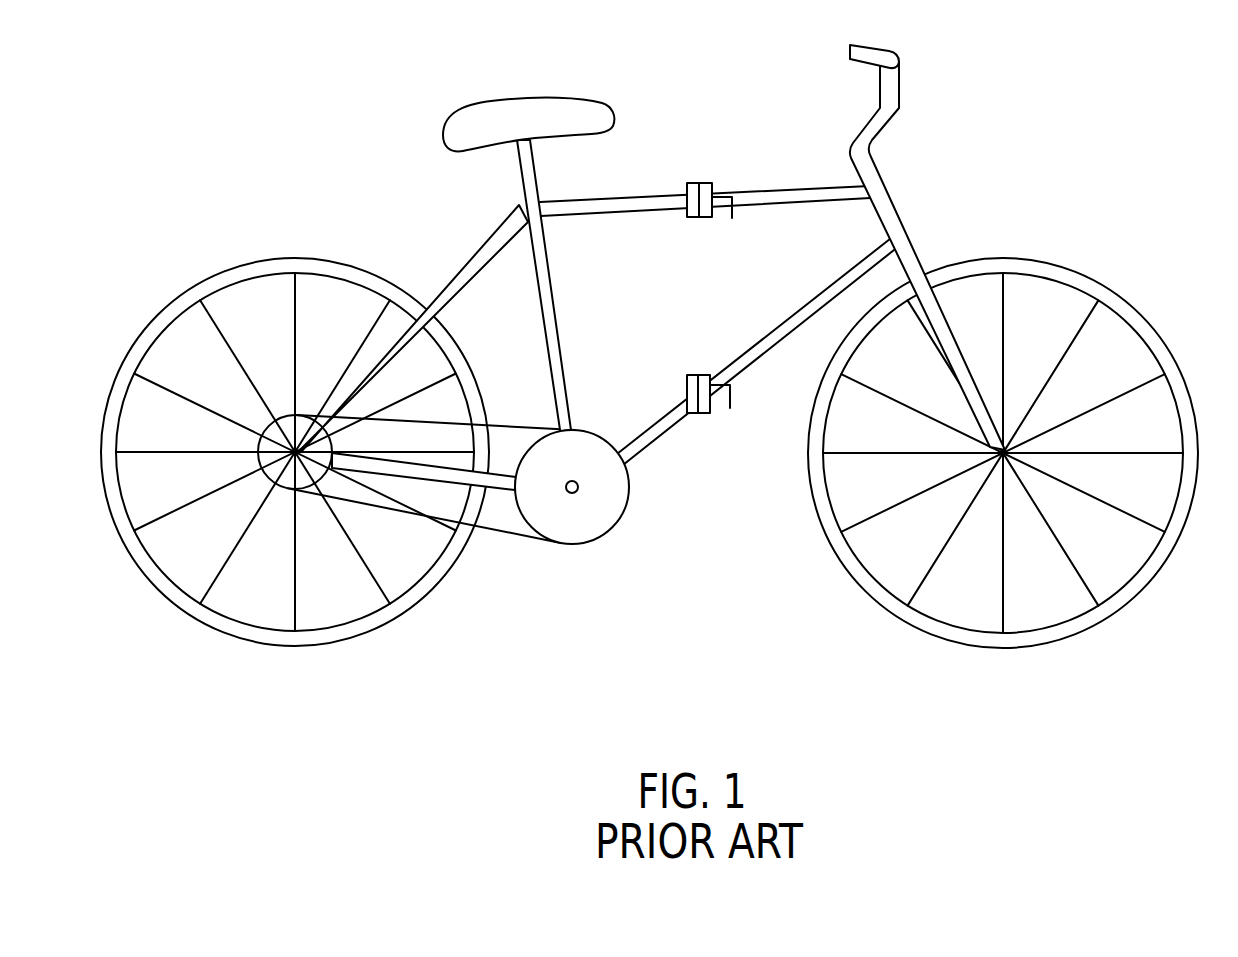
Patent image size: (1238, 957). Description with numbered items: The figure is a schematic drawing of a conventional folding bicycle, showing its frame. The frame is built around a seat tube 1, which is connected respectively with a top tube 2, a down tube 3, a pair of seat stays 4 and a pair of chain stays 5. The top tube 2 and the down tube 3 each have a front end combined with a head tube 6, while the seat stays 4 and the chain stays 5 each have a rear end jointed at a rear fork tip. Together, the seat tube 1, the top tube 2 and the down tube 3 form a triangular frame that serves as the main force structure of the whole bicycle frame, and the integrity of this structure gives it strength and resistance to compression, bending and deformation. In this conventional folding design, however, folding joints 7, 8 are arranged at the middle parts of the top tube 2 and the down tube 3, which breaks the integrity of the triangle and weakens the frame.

The seat tube 1 is at (545, 306).
The top tube 2 is at (787, 189).
The down tube 3 is at (837, 282).
The seat stays 4 is at (478, 253).
The chain stays 5 is at (495, 492).
The head tube 6 is at (888, 208).
The folding joint 7 is at (697, 182).
The folding joint 8 is at (696, 374).